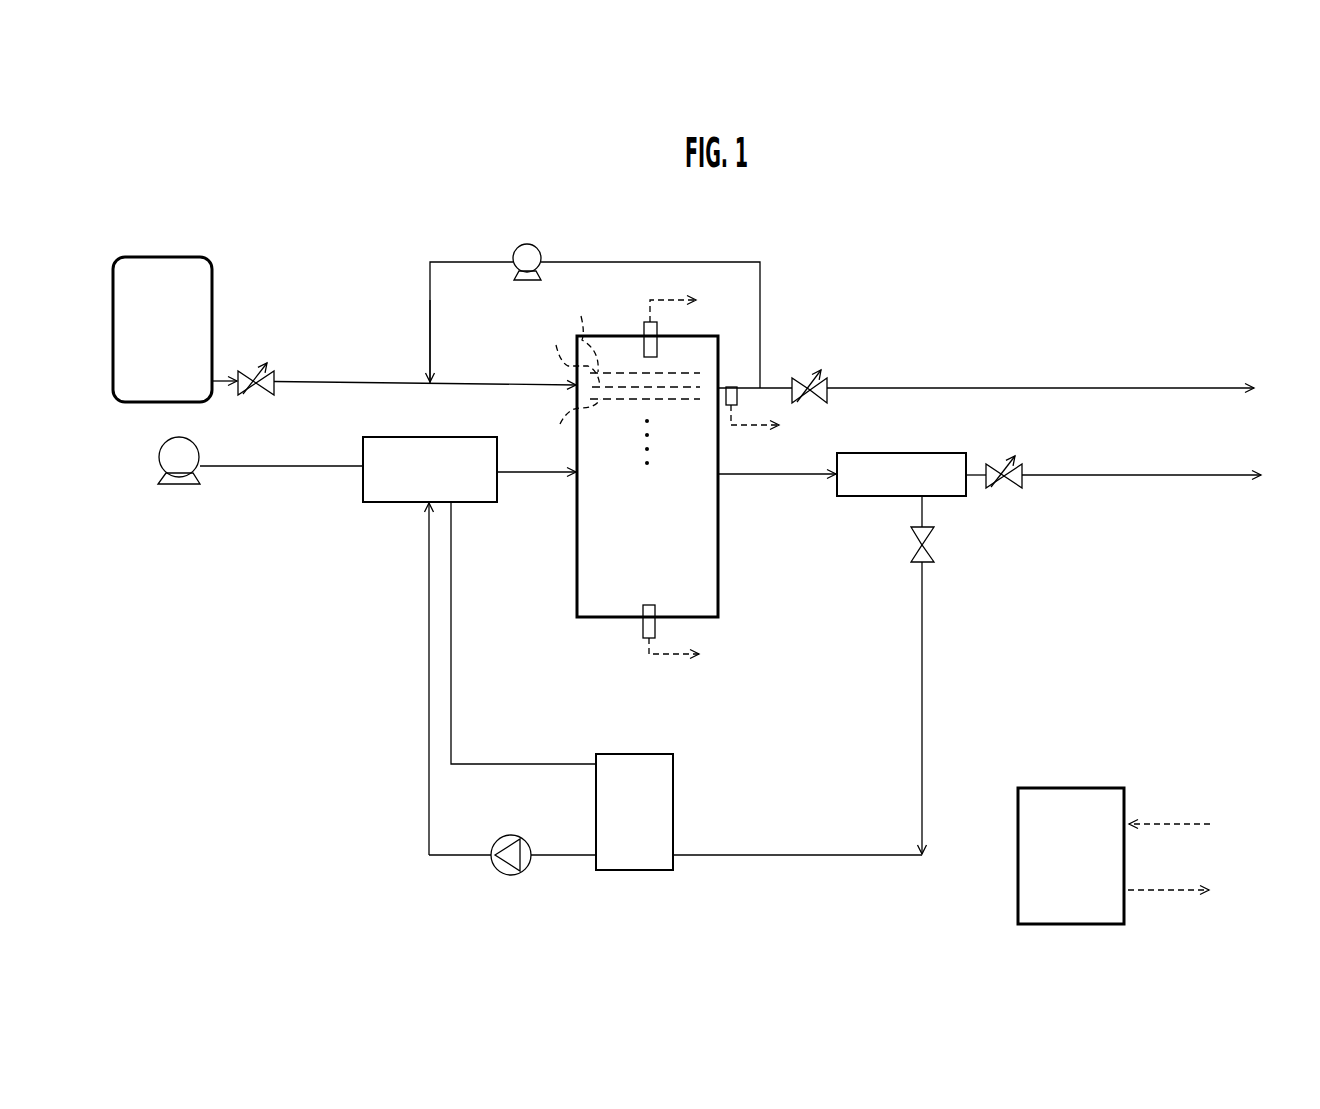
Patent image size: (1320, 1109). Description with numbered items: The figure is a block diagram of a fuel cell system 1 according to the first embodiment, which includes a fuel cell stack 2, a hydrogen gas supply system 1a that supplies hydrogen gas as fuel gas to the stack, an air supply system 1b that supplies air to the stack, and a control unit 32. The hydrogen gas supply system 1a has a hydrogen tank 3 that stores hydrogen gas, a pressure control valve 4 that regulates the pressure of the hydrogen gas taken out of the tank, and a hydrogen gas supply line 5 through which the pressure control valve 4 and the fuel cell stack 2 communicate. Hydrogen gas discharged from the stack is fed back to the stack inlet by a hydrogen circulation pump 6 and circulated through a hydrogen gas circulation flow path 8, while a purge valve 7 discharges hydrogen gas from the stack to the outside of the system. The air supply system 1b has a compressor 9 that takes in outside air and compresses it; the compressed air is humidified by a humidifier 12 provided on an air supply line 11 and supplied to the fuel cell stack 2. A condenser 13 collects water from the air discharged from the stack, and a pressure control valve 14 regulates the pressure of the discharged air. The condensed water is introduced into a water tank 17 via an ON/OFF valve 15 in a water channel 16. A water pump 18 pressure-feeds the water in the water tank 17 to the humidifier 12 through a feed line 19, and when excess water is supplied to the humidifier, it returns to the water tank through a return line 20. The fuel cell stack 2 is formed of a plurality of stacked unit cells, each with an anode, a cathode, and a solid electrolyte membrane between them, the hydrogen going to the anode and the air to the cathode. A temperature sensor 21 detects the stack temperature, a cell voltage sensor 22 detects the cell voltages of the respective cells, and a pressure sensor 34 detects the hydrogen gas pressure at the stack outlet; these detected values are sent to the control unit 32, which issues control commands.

The fuel cell system 1 is at (852, 255).
The hydrogen gas supply system 1a is at (439, 249).
The air supply system 1b is at (396, 756).
The fuel cell stack 2 is at (577, 525).
The hydrogen tank 3 is at (212, 266).
The pressure control valve 4 is at (246, 371).
The hydrogen gas supply line 5 is at (341, 382).
The hydrogen circulation pump 6 is at (530, 244).
The purge valve 7 is at (800, 378).
The hydrogen gas circulation flow path 8 is at (612, 262).
The compressor 9 is at (197, 445).
The air supply line 11 is at (332, 466).
The humidifier 12 is at (441, 437).
The condenser 13 is at (951, 453).
The pressure control valve 14 is at (1016, 464).
The ON/OFF valve 15 is at (936, 535).
The water channel 16 is at (925, 694).
The water tank 17 is at (633, 754).
The water pump 18 is at (508, 838).
The feed line 19 is at (429, 627).
The return line 20 is at (451, 632).
The temperature sensor 21 is at (646, 322).
The cell voltage sensor 22 is at (643, 622).
The control unit 32 is at (1071, 788).
The pressure sensor 34 is at (731, 387).